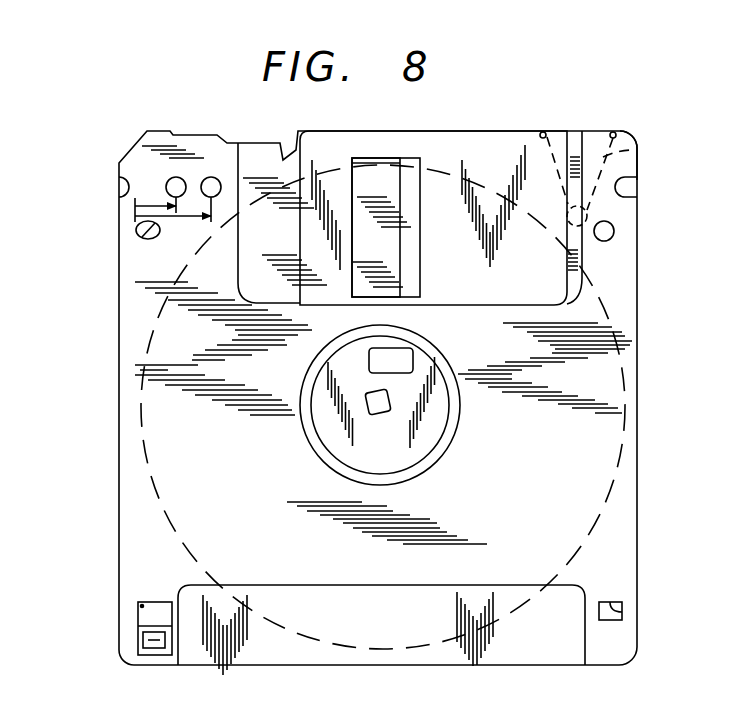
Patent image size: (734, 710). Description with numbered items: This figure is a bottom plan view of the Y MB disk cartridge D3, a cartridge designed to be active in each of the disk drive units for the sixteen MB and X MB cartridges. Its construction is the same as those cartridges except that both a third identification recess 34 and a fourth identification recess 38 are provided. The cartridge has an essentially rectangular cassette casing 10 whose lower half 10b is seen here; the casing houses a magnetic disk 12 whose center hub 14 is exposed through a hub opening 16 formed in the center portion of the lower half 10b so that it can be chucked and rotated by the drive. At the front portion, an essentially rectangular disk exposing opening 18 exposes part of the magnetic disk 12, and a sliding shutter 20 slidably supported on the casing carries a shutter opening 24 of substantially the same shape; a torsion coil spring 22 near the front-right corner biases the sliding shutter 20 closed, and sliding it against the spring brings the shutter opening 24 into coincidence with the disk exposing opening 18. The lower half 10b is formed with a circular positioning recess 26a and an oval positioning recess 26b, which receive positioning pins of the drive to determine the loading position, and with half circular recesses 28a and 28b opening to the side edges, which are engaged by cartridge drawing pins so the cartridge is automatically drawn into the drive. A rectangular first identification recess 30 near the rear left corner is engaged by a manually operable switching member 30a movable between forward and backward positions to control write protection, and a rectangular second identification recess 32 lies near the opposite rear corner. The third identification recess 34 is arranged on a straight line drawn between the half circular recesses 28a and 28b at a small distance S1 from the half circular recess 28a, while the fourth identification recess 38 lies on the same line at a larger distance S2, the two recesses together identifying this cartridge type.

The cassette casing 10 is at (118, 380).
The lower half 10b is at (130, 489).
The magnetic disk 12 is at (158, 420).
The center hub 14 is at (437, 396).
The hub opening 16 is at (452, 443).
The disk exposing opening 18 is at (460, 113).
The sliding shutter 20 is at (492, 150).
The torsion coil spring 22 is at (643, 148).
The shutter opening 24 is at (367, 167).
The positioning recess 26a is at (614, 232).
The positioning recess 26b is at (147, 238).
The half circular recess 28a is at (125, 185).
The half circular recess 28b is at (637, 185).
The first identification recess 30 is at (142, 603).
The manually operable switching member 30a is at (153, 640).
The second identification recess 32 is at (622, 610).
The third identification recess 34 is at (167, 180).
The fourth identification recess 38 is at (208, 180).
The distance S1 is at (143, 205).
The distance S2 is at (177, 220).
The disk cartridge D3 is at (568, 117).